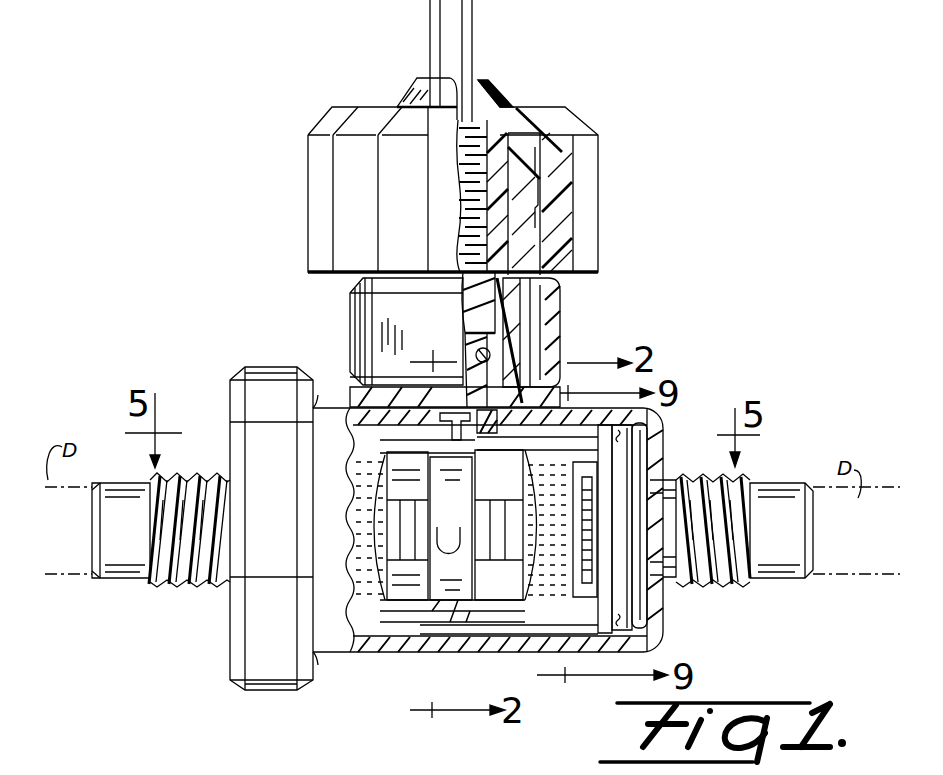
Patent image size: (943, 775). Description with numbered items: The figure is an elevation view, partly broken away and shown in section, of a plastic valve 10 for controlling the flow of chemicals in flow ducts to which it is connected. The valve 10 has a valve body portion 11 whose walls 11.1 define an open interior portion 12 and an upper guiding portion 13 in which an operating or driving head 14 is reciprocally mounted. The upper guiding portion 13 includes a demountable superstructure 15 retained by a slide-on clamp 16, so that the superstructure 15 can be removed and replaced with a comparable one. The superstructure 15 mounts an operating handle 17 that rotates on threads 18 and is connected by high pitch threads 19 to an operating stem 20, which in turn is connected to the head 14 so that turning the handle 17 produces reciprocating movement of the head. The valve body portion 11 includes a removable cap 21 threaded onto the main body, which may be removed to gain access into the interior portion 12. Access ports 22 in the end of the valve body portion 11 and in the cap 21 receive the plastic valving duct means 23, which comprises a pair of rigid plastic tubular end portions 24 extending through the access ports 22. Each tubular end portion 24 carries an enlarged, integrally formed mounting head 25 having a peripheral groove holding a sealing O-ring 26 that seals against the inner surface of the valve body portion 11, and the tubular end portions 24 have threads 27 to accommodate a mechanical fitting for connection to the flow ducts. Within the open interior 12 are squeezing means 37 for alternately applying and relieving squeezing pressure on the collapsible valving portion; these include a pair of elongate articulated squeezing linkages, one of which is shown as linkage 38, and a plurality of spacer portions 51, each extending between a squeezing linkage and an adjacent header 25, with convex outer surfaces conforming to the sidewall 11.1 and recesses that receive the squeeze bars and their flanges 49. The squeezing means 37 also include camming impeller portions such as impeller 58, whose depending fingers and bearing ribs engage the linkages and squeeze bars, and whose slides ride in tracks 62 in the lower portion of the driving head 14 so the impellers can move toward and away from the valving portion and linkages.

The plastic valve 10 is at (258, 270).
The valve body portion 11 is at (340, 640).
The walls 11.1 is at (397, 653).
The open interior portion 12 is at (404, 653).
The upper guiding portion 13 is at (520, 353).
The operating or driving head 14 is at (402, 387).
The demountable superstructure 15 is at (545, 297).
The slide-on clamp 16 is at (372, 310).
The operating handle 17 is at (580, 177).
The threads 18 is at (573, 128).
The high pitch threads 19 is at (503, 112).
The operating stem 20 is at (450, 27).
The removable cap 21 is at (263, 606).
The access ports 22 is at (590, 485).
The plastic valving duct means 23 is at (752, 478).
The rigid tubular end portions 24 is at (130, 568).
The mounting head 25 is at (645, 603).
The sealing O-ring 26 is at (545, 663).
The threads 27 is at (710, 585).
The squeezing means 37 is at (457, 642).
The squeezing linkage 38 is at (450, 567).
The flange 49 is at (657, 478).
The spacer portions 51 is at (367, 518).
The camming impeller portion 58 is at (521, 764).
The tracks 62 is at (425, 421).